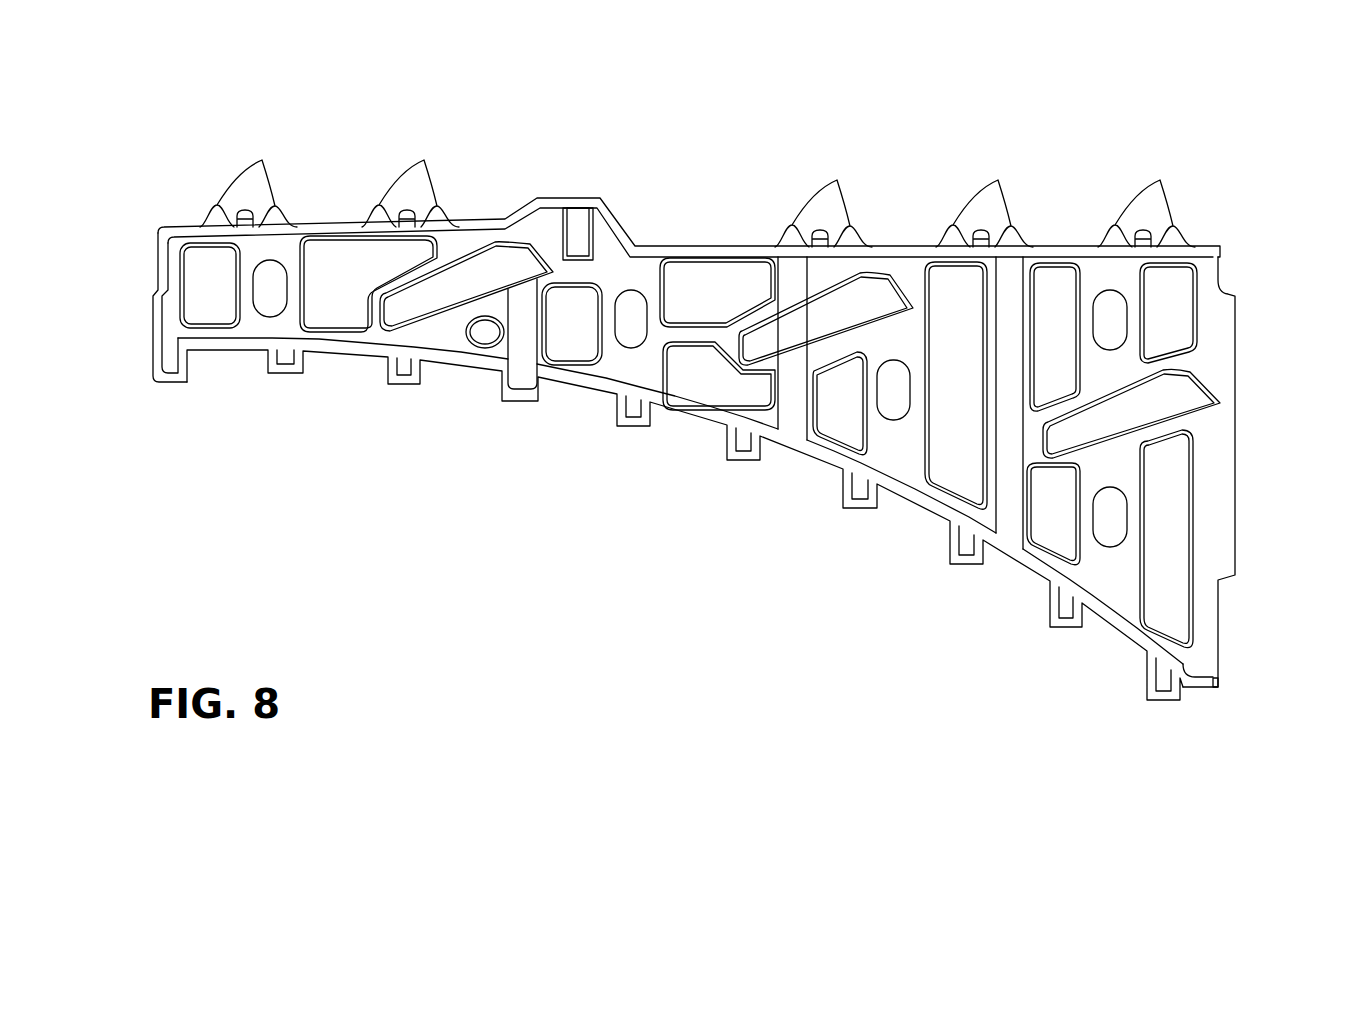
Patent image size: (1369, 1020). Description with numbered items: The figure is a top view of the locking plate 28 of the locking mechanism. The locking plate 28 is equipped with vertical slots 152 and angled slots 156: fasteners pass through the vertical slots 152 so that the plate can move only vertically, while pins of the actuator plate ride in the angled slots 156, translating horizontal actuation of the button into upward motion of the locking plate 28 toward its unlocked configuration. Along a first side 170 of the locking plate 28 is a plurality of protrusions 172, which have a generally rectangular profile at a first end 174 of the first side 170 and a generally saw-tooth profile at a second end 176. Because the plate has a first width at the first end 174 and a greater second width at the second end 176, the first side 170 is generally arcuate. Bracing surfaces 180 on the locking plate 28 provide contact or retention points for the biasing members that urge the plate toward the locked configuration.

The locking plate 28 is at (130, 163).
The vertical slots 152 is at (275, 268).
The angled slots 156 is at (488, 273).
The first side 170 is at (1117, 643).
The protrusions 172 is at (170, 383).
The first end 174 is at (153, 300).
The second end 176 is at (1238, 530).
The bracing surfaces 180 is at (1164, 142).